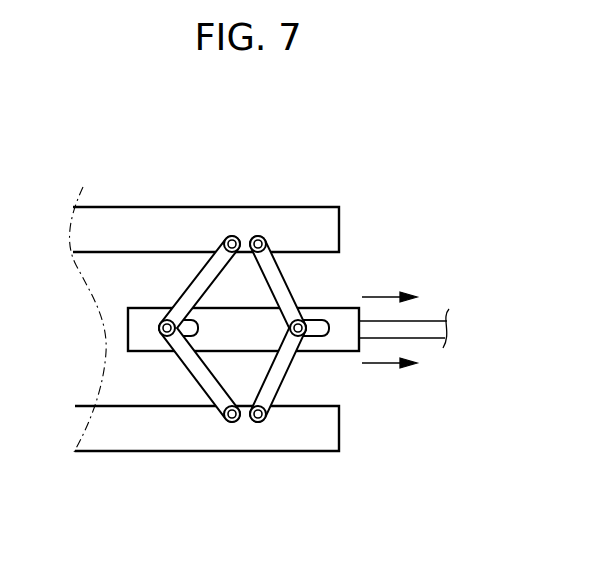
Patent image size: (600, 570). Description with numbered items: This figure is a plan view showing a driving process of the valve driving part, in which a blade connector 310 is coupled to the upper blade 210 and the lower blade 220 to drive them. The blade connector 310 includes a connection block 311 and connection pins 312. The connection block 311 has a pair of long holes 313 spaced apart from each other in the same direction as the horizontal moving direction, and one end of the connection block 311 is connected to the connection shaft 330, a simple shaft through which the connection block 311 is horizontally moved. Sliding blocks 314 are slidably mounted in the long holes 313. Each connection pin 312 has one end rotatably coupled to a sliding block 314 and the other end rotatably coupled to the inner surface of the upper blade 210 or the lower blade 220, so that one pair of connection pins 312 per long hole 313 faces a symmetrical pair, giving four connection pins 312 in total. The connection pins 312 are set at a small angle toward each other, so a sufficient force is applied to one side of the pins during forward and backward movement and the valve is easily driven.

The upper blade 210 is at (165, 215).
The lower blade 220 is at (138, 433).
The blade connector 310 is at (275, 352).
The connection block 311 is at (253, 333).
The connection pin 312 is at (282, 378).
The long hole 313 is at (317, 322).
The sliding block 314 is at (302, 337).
The connection shaft 330 is at (417, 325).